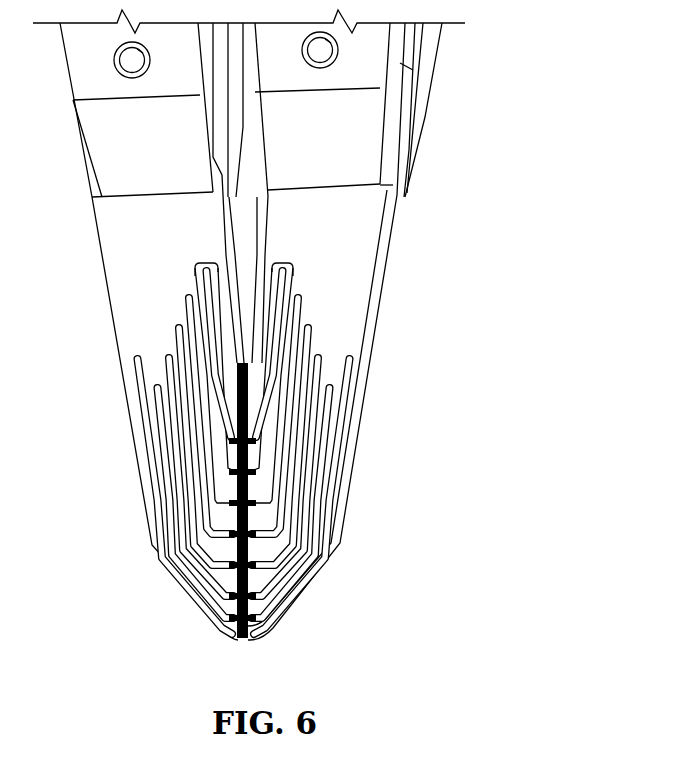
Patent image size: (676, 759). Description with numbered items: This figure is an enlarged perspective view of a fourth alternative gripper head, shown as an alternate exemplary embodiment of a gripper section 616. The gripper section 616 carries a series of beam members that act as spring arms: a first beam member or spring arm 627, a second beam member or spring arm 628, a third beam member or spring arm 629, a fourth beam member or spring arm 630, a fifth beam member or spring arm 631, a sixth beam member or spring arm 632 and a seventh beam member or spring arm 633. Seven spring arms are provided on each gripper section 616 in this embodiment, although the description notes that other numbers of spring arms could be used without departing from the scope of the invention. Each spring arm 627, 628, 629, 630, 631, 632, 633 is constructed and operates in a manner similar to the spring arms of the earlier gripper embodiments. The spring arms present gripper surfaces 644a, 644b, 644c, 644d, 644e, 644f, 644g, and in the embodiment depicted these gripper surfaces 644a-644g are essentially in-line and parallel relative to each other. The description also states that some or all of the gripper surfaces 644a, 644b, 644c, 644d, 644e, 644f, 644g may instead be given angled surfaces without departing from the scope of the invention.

The gripper section 616 is at (475, 229).
The first beam member or spring arm 627 is at (296, 287).
The second beam member or spring arm 628 is at (291, 326).
The third beam member or spring arm 629 is at (303, 360).
The fourth beam member or spring arm 630 is at (312, 387).
The fifth beam member or spring arm 631 is at (320, 390).
The sixth beam member or spring arm 632 is at (328, 404).
The seventh beam member or spring arm 633 is at (352, 448).
The gripper surface 644a is at (237, 395).
The gripper surface 644b is at (230, 455).
The gripper surface 644c is at (228, 487).
The gripper surface 644d is at (226, 515).
The gripper surface 644e is at (215, 543).
The gripper surface 644f is at (198, 562).
The gripper surface 644g is at (195, 607).